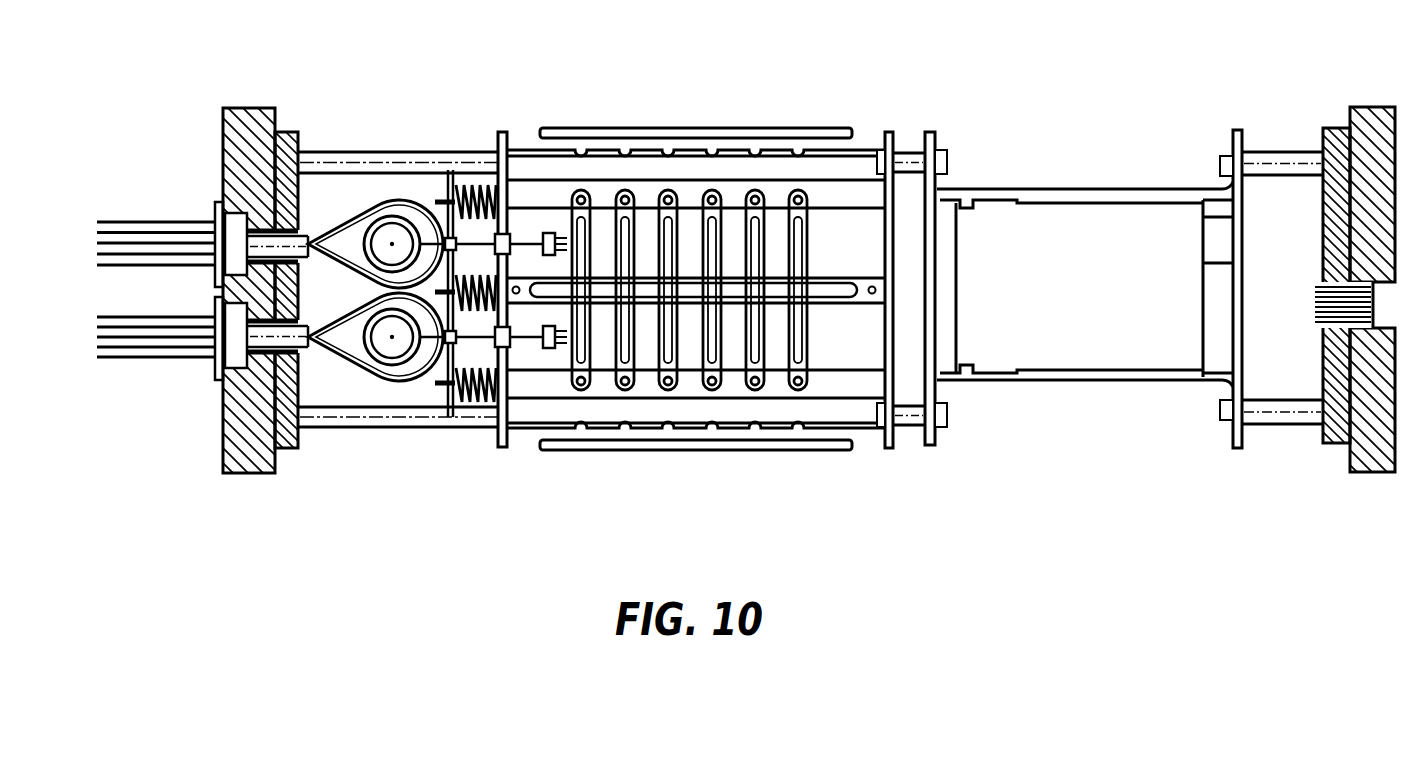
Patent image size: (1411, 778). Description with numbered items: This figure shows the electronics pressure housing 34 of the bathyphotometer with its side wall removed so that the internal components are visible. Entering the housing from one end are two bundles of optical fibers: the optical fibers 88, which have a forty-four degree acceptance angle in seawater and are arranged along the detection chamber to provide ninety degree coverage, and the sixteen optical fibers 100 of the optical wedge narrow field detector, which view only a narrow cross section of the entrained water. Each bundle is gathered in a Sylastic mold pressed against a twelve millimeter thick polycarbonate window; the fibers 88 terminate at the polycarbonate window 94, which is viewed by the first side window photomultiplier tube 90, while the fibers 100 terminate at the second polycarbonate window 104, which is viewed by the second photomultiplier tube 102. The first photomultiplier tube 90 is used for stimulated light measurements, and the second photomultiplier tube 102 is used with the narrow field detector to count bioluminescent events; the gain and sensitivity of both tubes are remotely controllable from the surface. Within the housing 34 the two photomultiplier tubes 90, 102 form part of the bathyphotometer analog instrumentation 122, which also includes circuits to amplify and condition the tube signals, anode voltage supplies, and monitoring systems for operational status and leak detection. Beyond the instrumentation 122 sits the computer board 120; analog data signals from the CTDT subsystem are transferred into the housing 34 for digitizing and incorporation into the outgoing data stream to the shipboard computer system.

The electronics pressure housing 34 is at (771, 106).
The optical fibers 88 is at (133, 221).
The first side window photomultiplier tube 90 is at (397, 232).
The polycarbonate window 94 is at (228, 222).
The optical fibers 100 is at (148, 358).
The second photomultiplier tube 102 is at (397, 347).
The second polycarbonate window 104 is at (225, 397).
The computer board 120 is at (1052, 233).
The bathyphotometer analog instrumentation 122 is at (730, 384).